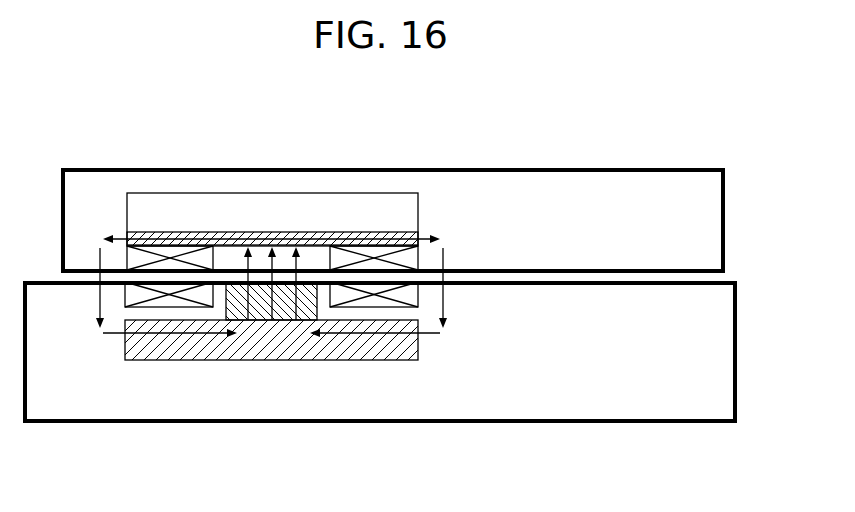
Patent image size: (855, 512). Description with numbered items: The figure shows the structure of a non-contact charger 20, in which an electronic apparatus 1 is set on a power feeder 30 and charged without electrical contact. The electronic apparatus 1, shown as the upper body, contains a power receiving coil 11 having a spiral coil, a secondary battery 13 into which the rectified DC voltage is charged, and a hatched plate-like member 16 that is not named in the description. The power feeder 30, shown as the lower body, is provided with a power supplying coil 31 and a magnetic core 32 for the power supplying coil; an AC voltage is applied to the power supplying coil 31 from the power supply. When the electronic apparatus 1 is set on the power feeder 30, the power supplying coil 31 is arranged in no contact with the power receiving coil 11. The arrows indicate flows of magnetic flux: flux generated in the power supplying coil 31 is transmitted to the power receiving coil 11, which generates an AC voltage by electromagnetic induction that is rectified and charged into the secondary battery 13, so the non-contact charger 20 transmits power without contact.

The non-contact charger 20 is at (669, 148).
The electronic apparatus 1 is at (723, 222).
The power feeder 30 is at (735, 353).
The secondary battery 13 is at (418, 212).
The permanent magnet 16 is at (274, 232).
The power receiving coil 11 is at (418, 263).
The power supplying coil 31 is at (418, 297).
The magnetic core 32 is at (418, 346).